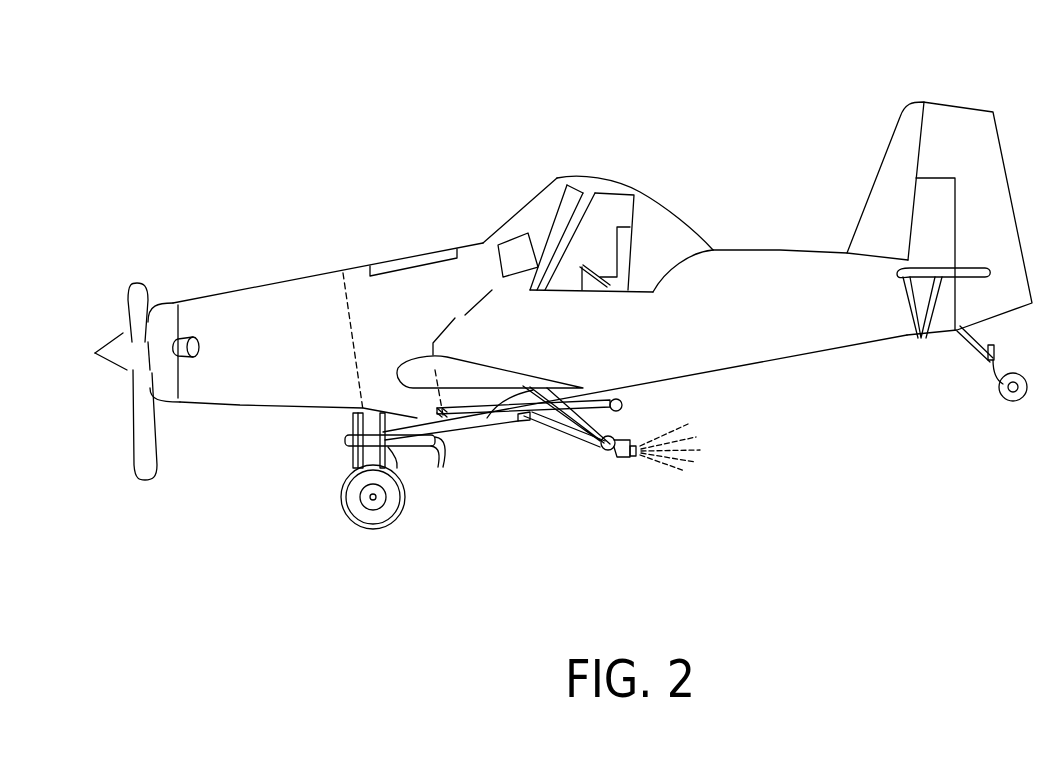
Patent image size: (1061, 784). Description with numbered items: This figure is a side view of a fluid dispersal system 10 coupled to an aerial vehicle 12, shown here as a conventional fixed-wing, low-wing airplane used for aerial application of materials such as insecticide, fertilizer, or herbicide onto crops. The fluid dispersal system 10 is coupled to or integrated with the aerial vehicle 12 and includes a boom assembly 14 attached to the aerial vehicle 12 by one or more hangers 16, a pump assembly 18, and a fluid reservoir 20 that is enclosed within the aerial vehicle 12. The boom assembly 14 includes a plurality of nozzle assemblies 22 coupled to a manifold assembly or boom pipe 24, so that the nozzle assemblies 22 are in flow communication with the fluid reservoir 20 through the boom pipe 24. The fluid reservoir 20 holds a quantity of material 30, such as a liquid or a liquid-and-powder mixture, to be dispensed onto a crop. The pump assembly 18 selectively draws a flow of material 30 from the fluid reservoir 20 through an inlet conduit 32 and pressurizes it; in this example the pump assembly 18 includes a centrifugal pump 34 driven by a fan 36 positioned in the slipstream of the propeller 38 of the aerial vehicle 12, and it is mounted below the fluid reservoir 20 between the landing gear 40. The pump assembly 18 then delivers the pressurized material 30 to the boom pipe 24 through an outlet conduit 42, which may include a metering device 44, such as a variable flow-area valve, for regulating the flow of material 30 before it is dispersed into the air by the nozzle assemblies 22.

The fluid dispersal system 10 is at (796, 521).
The aerial vehicle 12 is at (950, 100).
The boom assembly 14 is at (638, 423).
The hanger 16 is at (483, 420).
The pump assembly 18 is at (312, 489).
The fluid reservoir 20 is at (430, 307).
The nozzle assembly 22 is at (612, 455).
The boom pipe 24 is at (598, 443).
The material 30 is at (670, 466).
The inlet conduit 32 is at (443, 448).
The centrifugal pump 34 is at (382, 450).
The fan 36 is at (350, 418).
The propeller 38 is at (137, 460).
The landing gear 40 is at (353, 520).
The outlet conduit 42 is at (467, 430).
The metering device 44 is at (523, 420).